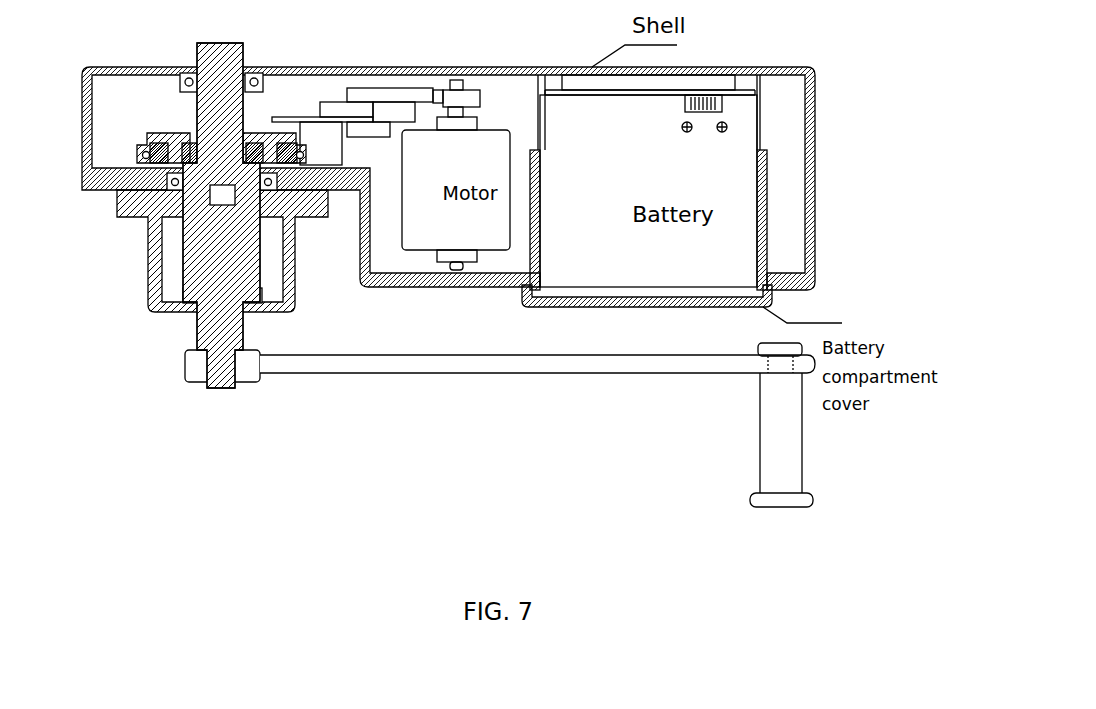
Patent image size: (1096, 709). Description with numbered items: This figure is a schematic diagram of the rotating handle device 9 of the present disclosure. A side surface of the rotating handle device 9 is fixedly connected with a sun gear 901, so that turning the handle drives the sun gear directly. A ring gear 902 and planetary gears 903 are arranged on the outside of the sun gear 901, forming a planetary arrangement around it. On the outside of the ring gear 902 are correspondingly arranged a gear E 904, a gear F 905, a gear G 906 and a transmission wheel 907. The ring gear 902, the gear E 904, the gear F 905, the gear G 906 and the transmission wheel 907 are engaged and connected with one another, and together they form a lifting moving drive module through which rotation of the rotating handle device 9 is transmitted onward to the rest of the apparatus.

The rotating handle device 9 is at (443, 370).
The sun gear 901 is at (208, 113).
The ring gear 902 is at (137, 162).
The planetary gear 903 is at (318, 192).
The gear E 904 is at (302, 118).
The gear F 905 is at (348, 108).
The gear G 906 is at (382, 90).
The transmission wheel 907 is at (467, 98).